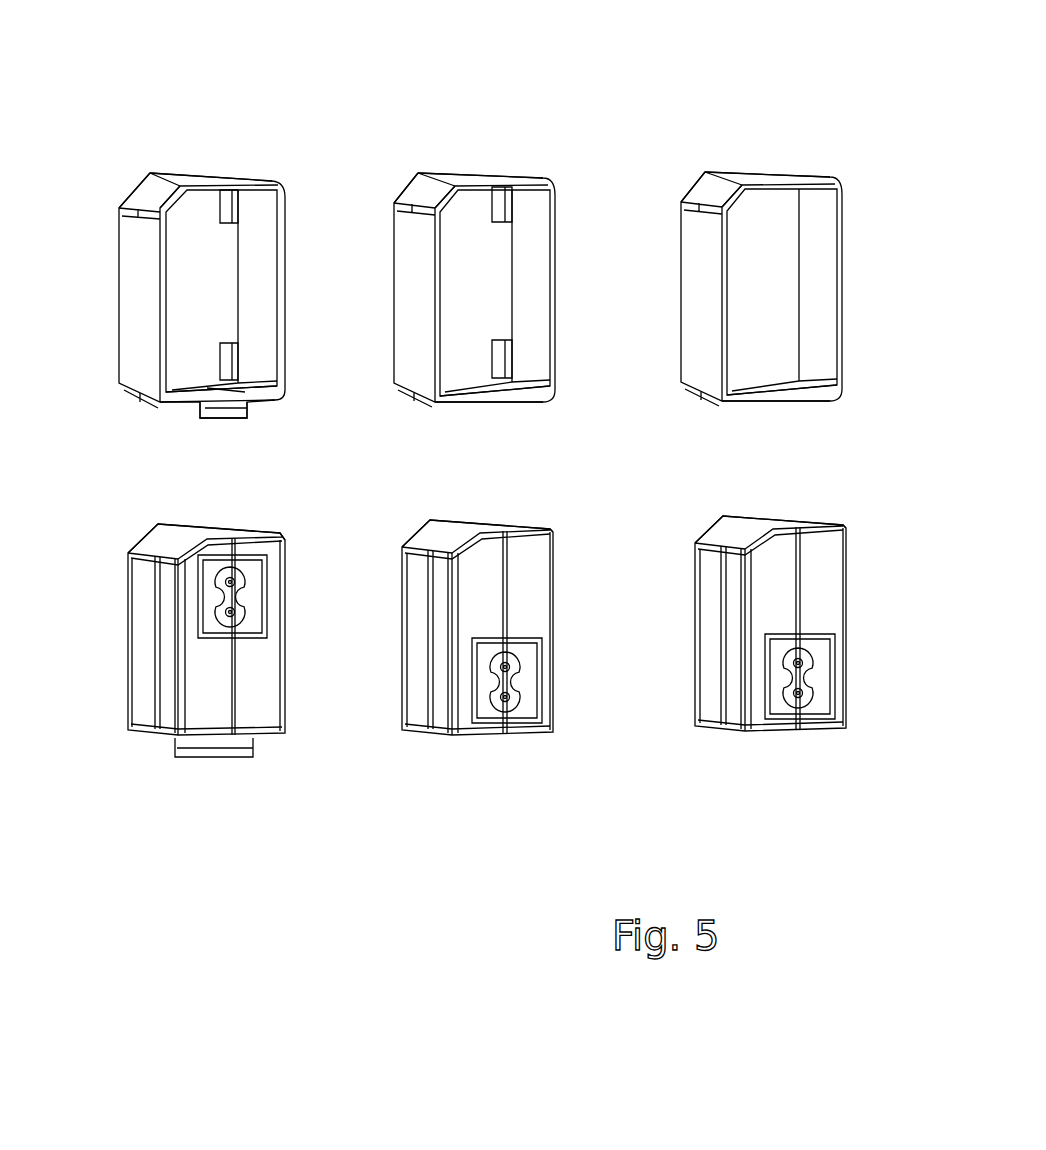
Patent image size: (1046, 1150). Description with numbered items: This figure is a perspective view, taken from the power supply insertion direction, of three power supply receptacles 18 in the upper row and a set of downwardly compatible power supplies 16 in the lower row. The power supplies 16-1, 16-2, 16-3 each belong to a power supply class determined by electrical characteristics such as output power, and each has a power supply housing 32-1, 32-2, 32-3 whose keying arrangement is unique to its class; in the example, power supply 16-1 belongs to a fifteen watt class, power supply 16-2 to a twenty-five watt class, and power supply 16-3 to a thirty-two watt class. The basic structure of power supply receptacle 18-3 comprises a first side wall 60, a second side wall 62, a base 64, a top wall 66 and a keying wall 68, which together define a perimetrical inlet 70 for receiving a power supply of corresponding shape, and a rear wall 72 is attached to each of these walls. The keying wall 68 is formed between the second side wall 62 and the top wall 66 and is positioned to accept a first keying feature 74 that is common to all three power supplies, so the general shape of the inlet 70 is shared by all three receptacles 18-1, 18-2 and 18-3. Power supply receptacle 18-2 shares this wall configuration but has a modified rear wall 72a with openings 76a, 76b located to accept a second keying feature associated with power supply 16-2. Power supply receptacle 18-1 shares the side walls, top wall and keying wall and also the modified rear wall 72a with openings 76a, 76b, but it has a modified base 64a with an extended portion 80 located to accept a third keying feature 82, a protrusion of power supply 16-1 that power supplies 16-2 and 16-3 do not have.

The power supply receptacle 18 is at (45, 118).
The power supply receptacle 18-1 is at (119, 228).
The power supply receptacle 18-2 is at (394, 228).
The power supply receptacle 18-3 is at (680, 223).
The power supply 16 is at (43, 505).
The power supply 16-1 is at (118, 597).
The power supply 16-2 is at (398, 613).
The power supply 16-3 is at (693, 628).
The power supply housing 32-1 is at (128, 655).
The power supply housing 32-2 is at (402, 662).
The power supply housing 32-3 is at (695, 680).
The first side wall 60 is at (287, 246).
The second side wall 62 is at (139, 257).
The base 64 is at (541, 402).
The modified base 64a is at (272, 402).
The top wall 66 is at (200, 176).
The keying wall 68 is at (145, 190).
The inlet 70 is at (835, 346).
The rear wall 72 is at (770, 220).
The modified rear wall 72a is at (185, 318).
The first keying feature 74 is at (150, 540).
The opening 76a is at (278, 212).
The opening 76b is at (240, 360).
The extended portion 80 is at (220, 418).
The third keying feature 82 is at (193, 757).